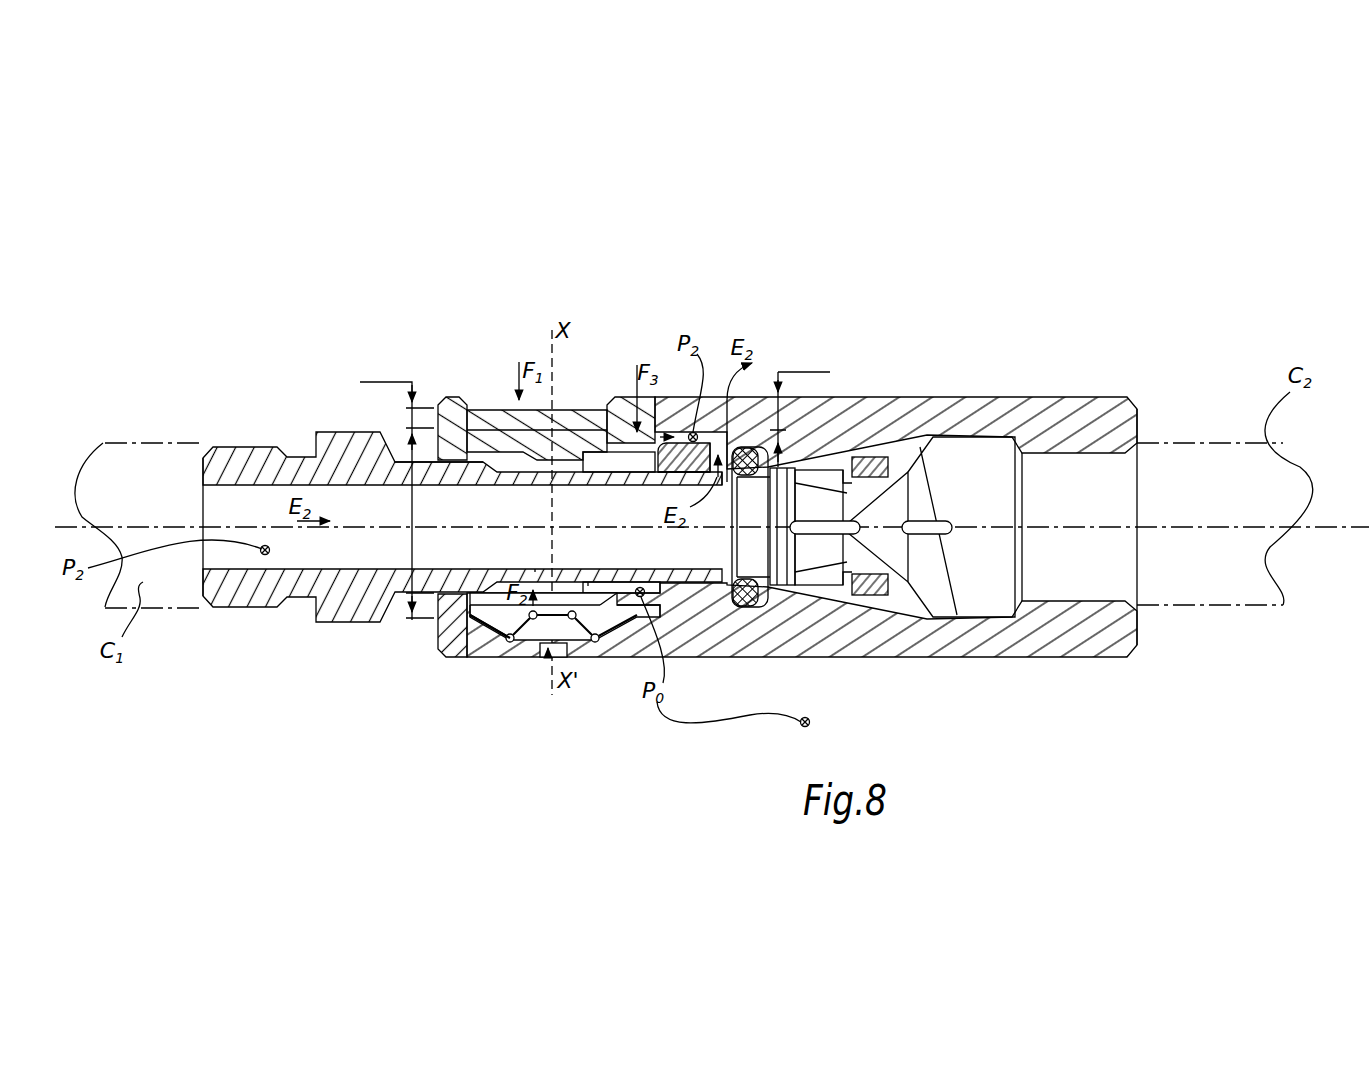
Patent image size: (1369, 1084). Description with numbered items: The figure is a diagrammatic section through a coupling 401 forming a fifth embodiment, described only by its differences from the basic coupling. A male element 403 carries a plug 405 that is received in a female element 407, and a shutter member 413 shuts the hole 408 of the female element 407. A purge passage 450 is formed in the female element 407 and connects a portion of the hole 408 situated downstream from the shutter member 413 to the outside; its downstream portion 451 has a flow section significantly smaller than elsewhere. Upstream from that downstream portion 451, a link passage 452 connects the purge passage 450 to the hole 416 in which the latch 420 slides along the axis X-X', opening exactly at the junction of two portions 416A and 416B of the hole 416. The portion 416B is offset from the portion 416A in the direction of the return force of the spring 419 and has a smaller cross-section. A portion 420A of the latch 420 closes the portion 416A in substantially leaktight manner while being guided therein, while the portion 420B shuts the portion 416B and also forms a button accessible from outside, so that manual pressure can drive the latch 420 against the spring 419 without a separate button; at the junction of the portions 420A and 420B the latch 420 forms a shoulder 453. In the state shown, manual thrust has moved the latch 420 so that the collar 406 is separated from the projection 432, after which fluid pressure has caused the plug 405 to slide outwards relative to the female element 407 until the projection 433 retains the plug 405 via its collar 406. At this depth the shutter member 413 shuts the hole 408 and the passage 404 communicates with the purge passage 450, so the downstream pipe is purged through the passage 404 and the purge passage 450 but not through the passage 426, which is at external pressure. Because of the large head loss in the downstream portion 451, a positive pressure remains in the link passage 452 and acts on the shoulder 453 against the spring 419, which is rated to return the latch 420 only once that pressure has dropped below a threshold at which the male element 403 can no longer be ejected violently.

The coupling 401 is at (1145, 357).
The male element 403 is at (228, 597).
The passage 404 is at (210, 497).
The plug 405 is at (535, 571).
The collar 406 is at (588, 586).
The female element 407 is at (985, 415).
The hole 408 is at (1100, 490).
The shutter member 413 is at (895, 545).
The hole 416 is at (546, 645).
The portion of the hole 416A is at (431, 509).
The portion of the hole 416B is at (394, 489).
The spring 419 is at (507, 640).
The latch 420 is at (478, 625).
The portion of the latch 420A is at (633, 398).
The portion of the latch 420B is at (487, 407).
The passage 426 is at (665, 602).
The projection 432 is at (607, 607).
The projection 433 is at (582, 485).
The purge passage 450 is at (722, 478).
The downstream portion 451 is at (800, 406).
The link passage 452 is at (648, 430).
The shoulder 453 is at (620, 425).